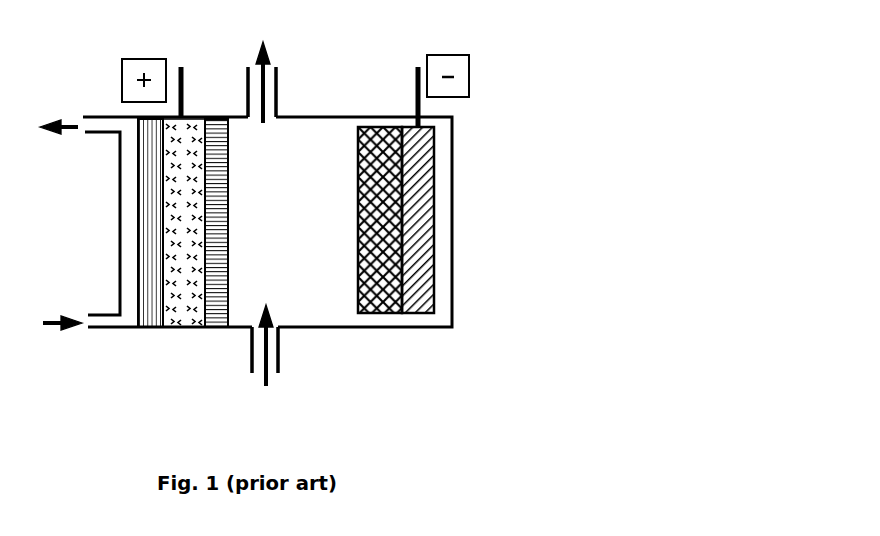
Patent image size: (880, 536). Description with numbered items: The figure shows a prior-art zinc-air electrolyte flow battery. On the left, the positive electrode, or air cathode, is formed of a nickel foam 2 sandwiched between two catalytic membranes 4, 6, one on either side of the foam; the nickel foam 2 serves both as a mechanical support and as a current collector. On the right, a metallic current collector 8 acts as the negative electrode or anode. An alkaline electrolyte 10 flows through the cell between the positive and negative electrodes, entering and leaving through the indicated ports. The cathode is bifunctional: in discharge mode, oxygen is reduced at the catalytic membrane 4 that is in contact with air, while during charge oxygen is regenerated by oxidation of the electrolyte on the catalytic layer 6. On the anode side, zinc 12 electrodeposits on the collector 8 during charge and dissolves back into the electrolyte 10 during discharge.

The alkaline electrolyte 10 is at (283, 183).
The nickel foam 2 is at (182, 328).
The catalytic membrane 4 is at (148, 328).
The catalytic membrane 6 is at (220, 328).
The metallic current collector 8 is at (436, 208).
The zinc 12 is at (387, 313).